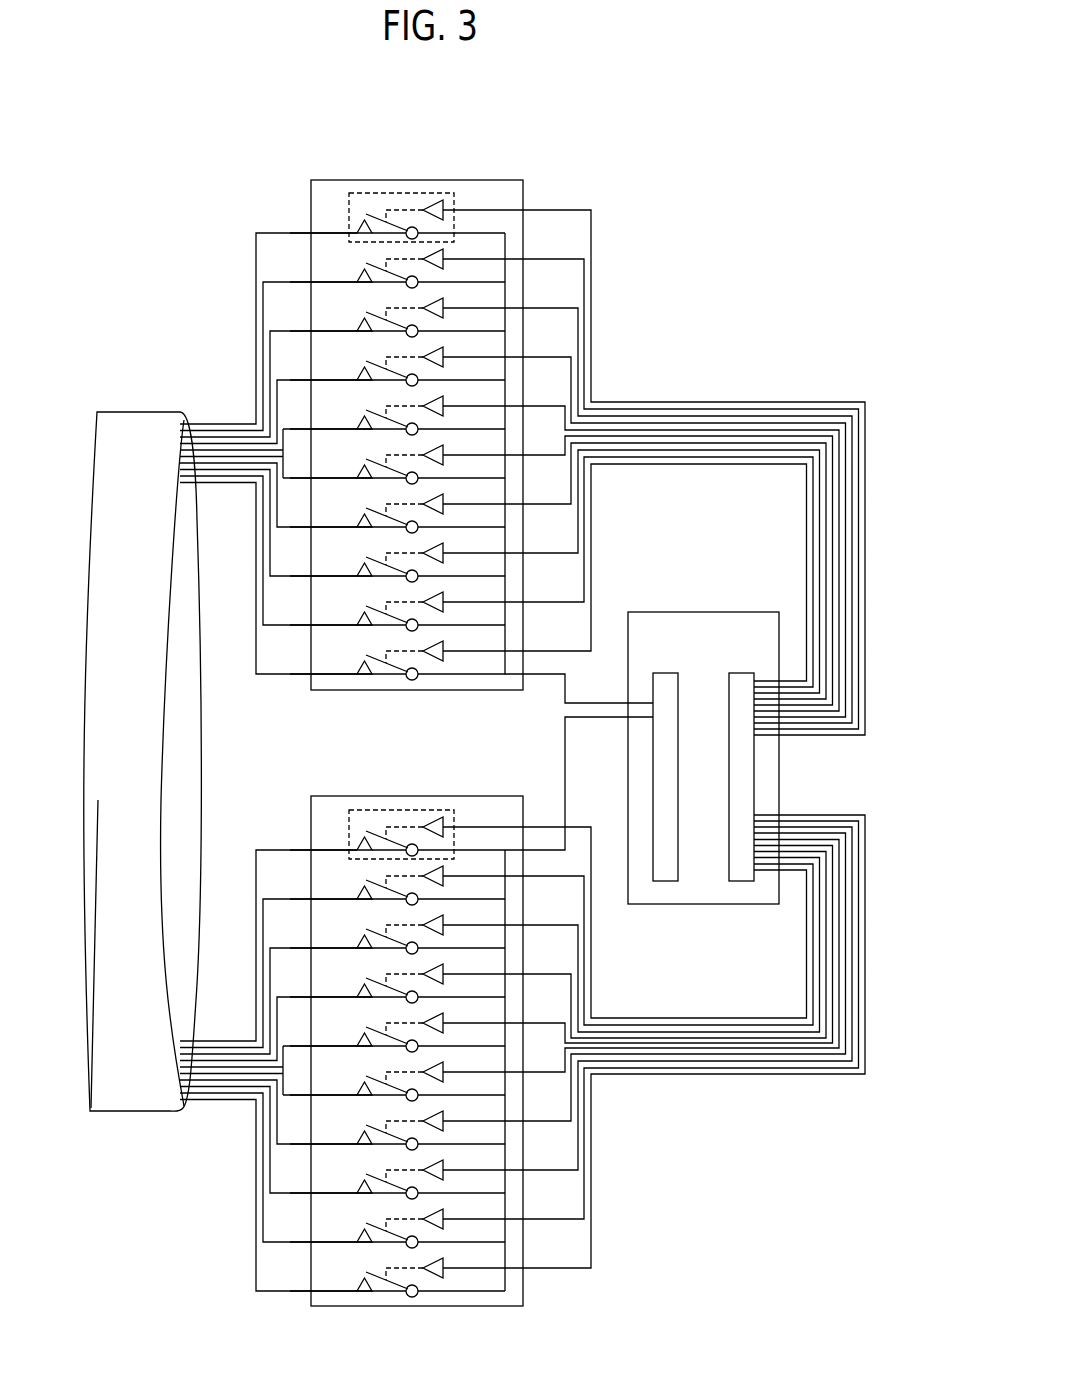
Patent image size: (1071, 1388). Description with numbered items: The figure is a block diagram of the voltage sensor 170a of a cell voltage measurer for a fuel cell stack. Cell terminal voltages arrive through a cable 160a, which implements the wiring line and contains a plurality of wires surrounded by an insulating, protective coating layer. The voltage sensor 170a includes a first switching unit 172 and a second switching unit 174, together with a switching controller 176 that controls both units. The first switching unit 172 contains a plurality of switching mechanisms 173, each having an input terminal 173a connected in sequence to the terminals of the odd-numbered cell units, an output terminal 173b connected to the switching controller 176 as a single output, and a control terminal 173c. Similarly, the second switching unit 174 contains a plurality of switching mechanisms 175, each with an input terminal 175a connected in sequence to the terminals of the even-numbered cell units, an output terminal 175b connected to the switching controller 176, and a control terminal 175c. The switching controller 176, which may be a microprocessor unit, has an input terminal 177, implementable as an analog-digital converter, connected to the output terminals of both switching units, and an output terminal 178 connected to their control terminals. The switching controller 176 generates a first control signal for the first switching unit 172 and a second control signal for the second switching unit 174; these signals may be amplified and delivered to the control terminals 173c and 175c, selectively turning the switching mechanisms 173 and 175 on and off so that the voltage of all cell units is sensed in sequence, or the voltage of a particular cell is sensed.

The cable 160a is at (132, 411).
The voltage sensor 170a is at (108, 133).
The first switching unit 172 is at (461, 403).
The switching mechanism 173 is at (387, 172).
The input terminal 173a is at (348, 224).
The output terminal 173b is at (414, 227).
The control terminal 173c is at (371, 212).
The second switching unit 174 is at (461, 1011).
The switching mechanism 175 is at (387, 789).
The input terminal 175a is at (348, 841).
The output terminal 175b is at (414, 844).
The control terminal 175c is at (371, 829).
The switching controller 176 is at (703, 754).
The input terminal 177 is at (666, 882).
The output terminal 178 is at (738, 882).